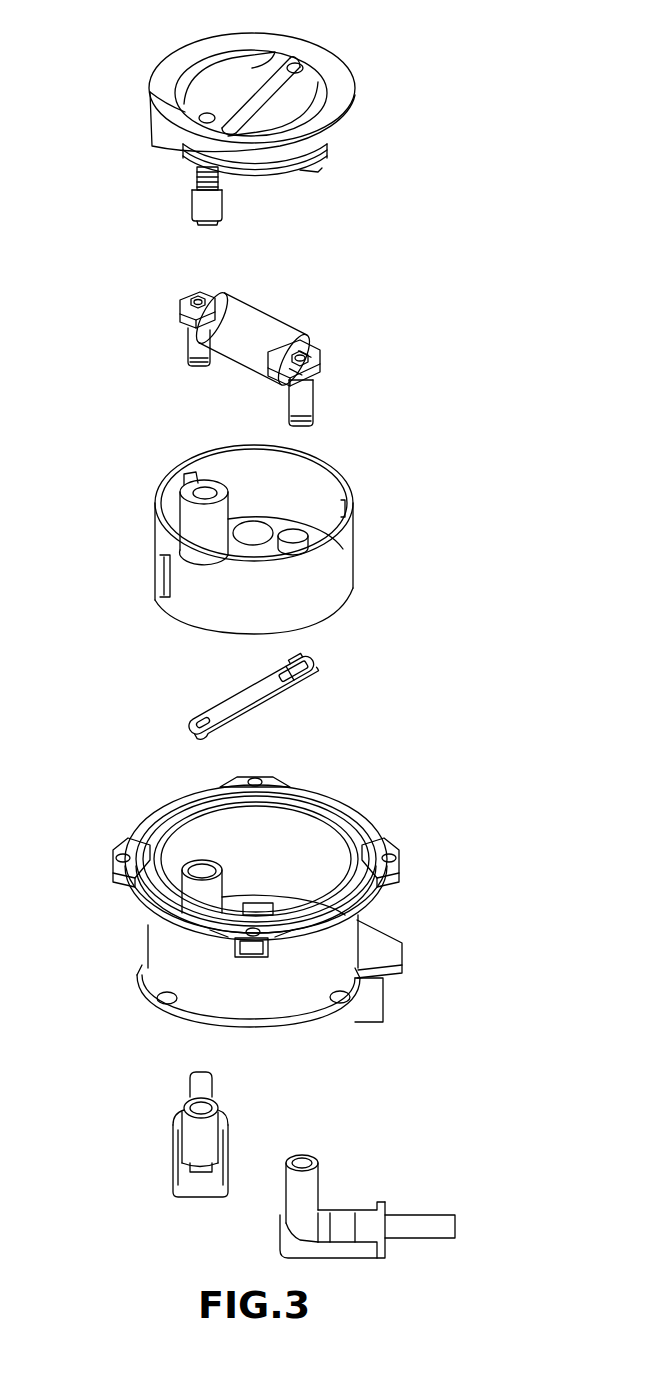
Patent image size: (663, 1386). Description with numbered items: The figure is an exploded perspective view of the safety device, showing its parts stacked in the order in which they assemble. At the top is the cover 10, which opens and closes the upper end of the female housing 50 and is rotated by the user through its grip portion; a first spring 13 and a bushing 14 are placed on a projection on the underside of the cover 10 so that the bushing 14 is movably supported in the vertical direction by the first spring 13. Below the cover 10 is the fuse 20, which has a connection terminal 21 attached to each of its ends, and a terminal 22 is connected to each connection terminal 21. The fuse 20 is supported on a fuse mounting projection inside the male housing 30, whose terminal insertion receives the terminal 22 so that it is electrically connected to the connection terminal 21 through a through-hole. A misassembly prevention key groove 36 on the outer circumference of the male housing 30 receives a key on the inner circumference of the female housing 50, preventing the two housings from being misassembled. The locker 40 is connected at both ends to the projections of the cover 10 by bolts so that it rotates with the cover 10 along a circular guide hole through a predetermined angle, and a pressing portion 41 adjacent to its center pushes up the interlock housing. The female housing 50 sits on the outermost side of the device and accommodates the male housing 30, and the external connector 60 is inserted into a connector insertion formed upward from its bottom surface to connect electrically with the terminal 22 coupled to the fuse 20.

The cover 10 is at (173, 70).
The first spring 13 is at (190, 172).
The bushing 14 is at (198, 200).
The fuse 20 is at (247, 320).
The connection terminal 21 is at (313, 357).
The terminal 22 is at (303, 397).
The male housing 30 is at (327, 562).
The misassembly prevention key groove 36 is at (160, 557).
The locker 40 is at (233, 693).
The pressing portion 41 is at (260, 690).
The female housing 50 is at (150, 782).
The external connector 60 is at (315, 1183).